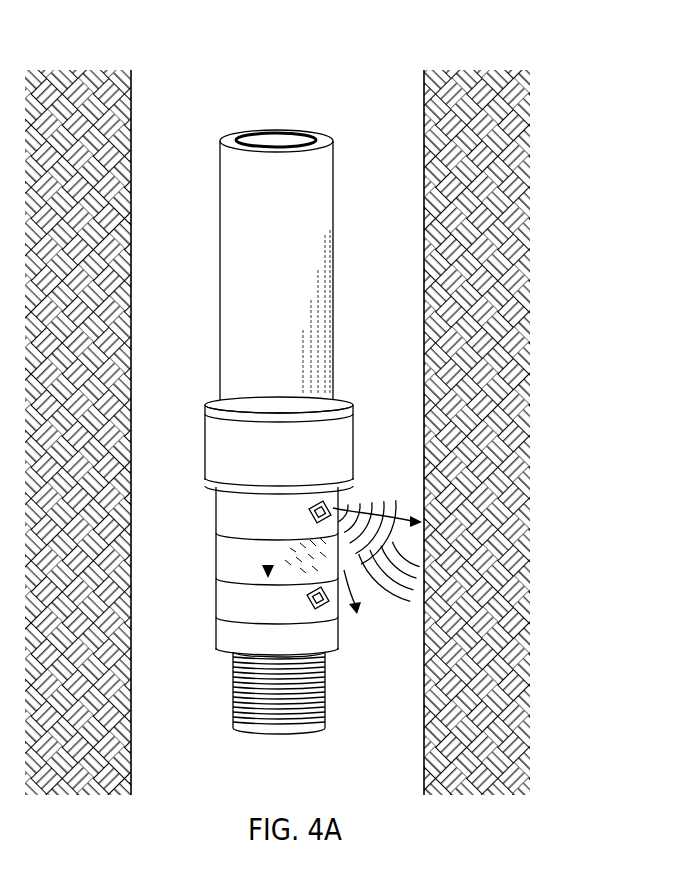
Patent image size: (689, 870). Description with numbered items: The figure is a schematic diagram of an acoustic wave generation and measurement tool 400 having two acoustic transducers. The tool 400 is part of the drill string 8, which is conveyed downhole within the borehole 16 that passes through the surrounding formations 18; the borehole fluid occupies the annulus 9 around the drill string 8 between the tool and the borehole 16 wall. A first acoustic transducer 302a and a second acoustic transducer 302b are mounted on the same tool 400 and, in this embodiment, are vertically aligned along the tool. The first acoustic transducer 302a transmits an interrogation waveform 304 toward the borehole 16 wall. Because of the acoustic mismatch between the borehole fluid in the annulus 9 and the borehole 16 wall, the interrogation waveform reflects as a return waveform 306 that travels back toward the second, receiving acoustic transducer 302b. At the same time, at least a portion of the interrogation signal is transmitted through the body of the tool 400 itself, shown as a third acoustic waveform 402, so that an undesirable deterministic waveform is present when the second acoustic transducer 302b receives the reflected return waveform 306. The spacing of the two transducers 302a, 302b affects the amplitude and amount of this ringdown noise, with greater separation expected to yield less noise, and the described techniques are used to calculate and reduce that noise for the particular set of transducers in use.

The acoustic wave generation and measurement tool 400 is at (145, 53).
The drill string 8 is at (218, 178).
The borehole 16 is at (427, 162).
The annulus 9 is at (393, 255).
The formations 18 is at (515, 293).
The first acoustic transducer 302a is at (318, 500).
The second acoustic transducer 302b is at (314, 606).
The interrogation waveform 304 is at (367, 514).
The return waveform 306 is at (373, 597).
The third acoustic waveform 402 is at (266, 556).